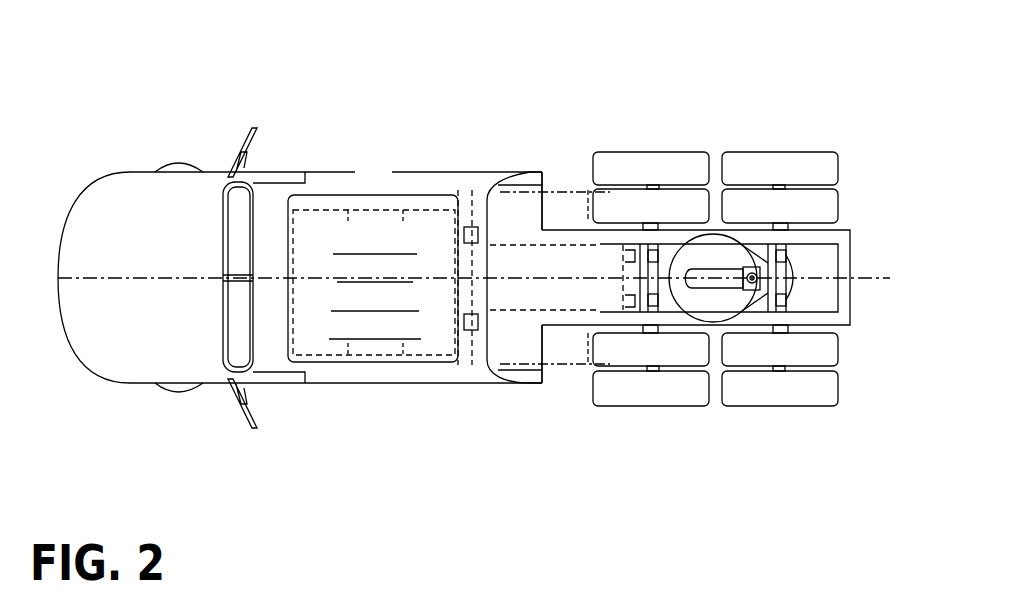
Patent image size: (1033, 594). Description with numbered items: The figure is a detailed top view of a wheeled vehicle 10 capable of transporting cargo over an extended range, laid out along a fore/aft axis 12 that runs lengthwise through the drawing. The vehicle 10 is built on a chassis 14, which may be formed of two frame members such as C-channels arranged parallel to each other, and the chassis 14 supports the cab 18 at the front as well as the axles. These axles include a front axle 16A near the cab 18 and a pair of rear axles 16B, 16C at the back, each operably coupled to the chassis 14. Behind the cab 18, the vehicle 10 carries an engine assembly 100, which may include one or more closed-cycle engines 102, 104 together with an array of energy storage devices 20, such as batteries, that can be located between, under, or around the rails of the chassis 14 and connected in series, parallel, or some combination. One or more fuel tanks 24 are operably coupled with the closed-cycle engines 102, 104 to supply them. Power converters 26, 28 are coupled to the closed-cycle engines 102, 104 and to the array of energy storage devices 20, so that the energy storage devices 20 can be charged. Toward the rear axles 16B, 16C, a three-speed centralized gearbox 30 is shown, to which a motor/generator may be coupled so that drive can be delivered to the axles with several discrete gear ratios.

The wheeled vehicle 10 is at (774, 101).
The fore/aft axis 12 is at (870, 278).
The chassis 14 is at (617, 320).
The front axle 16A is at (178, 163).
The rear axle 16B is at (653, 305).
The rear axle 16C is at (780, 305).
The cab 18 is at (495, 103).
The array of energy storage devices 20 is at (375, 195).
The fuel tank 24 is at (575, 289).
The power converter 26 is at (470, 226).
The power converter 28 is at (470, 332).
The three-speed centralized gearbox 30 is at (662, 262).
The engine assembly 100 is at (554, 92).
The closed-cycle engine 102 is at (577, 185).
The closed-cycle engine 104 is at (578, 368).